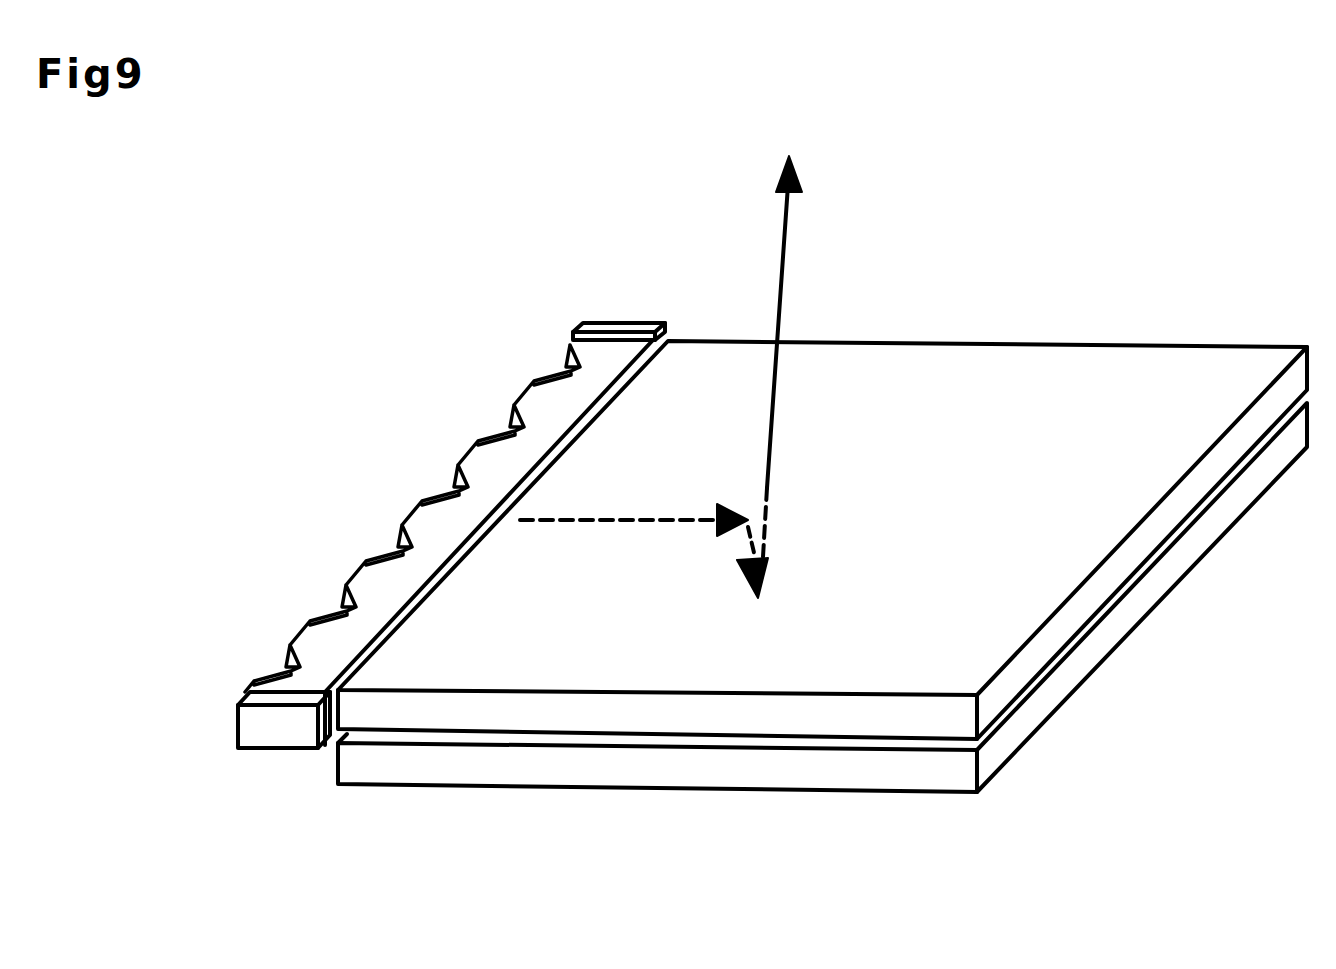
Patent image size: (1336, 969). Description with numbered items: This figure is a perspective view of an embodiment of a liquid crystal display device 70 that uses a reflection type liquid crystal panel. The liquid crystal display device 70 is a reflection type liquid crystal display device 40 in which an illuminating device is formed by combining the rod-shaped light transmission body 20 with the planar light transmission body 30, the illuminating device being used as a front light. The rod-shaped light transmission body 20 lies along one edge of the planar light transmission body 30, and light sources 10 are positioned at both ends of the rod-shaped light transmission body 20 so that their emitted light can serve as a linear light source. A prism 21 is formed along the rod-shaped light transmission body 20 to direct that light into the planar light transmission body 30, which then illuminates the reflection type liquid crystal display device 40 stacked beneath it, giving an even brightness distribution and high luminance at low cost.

The light source (LED) 10 is at (617, 316).
The rod-shaped light transmission body 20 is at (478, 495).
The prism 21 is at (505, 434).
The planar light transmission body 30 is at (1006, 398).
The reflection type liquid crystal display device 40 is at (717, 764).
The liquid crystal display device 70 is at (940, 318).